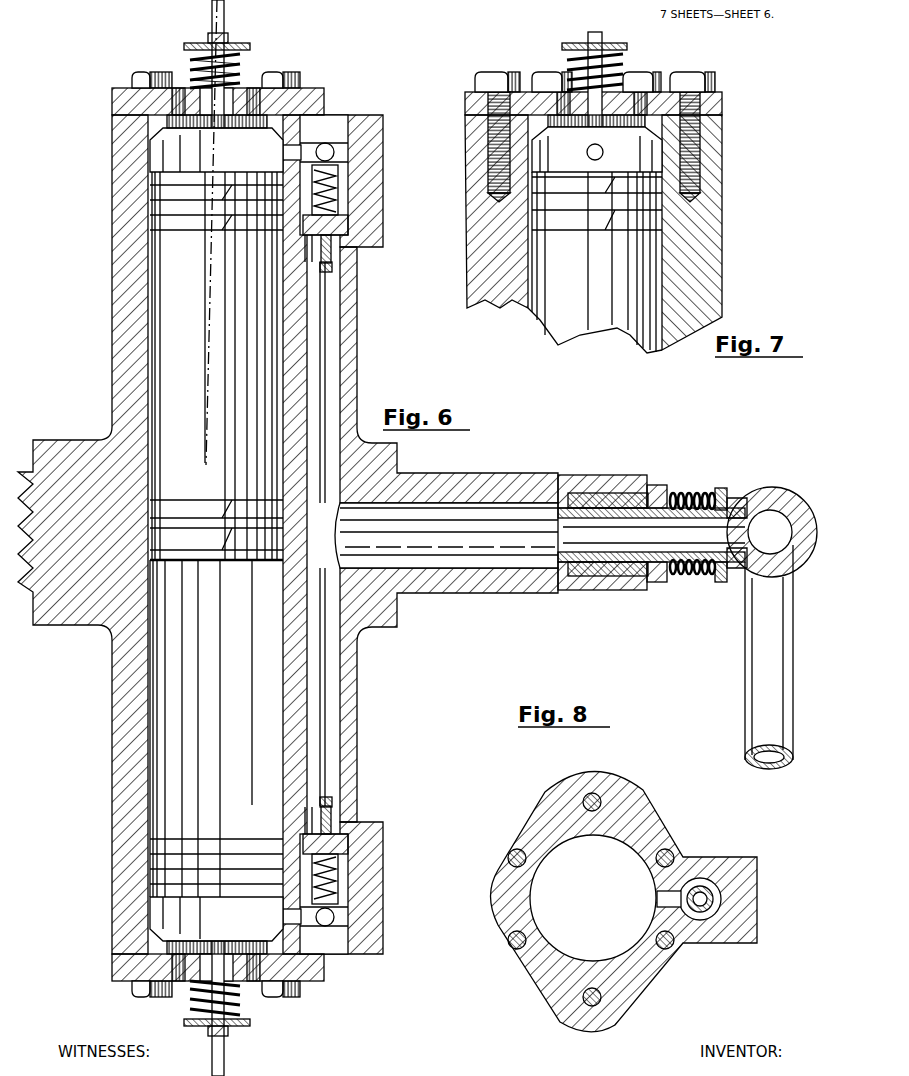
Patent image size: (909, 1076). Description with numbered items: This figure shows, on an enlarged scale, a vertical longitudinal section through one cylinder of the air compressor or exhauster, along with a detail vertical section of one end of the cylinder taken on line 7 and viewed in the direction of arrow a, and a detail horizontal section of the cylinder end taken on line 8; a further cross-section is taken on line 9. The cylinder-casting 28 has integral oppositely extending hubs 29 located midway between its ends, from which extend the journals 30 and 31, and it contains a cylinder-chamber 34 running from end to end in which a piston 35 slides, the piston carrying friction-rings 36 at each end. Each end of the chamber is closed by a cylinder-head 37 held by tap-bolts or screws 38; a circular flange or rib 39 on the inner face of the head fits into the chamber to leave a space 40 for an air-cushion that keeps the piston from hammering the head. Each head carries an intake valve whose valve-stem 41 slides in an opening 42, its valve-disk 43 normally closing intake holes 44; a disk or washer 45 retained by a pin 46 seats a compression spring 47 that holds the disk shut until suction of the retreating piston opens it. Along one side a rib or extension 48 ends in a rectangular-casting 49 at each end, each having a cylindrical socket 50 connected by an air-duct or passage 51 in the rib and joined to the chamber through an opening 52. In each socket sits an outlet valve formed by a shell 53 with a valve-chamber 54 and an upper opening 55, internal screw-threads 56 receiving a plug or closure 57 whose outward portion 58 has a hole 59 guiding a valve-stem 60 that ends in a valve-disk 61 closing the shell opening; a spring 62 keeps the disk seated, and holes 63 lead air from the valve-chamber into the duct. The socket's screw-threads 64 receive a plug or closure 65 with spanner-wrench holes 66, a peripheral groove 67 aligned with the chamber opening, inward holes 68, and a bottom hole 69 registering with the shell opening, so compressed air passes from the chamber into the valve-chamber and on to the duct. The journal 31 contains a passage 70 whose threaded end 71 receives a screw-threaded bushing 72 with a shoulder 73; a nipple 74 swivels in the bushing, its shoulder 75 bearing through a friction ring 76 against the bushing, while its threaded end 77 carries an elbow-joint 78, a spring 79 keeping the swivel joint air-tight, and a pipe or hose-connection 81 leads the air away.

In FIG. 6, the section line 7- 7 is at (215, 335).
In FIG. 6, the section line 8- 8 is at (112, 148).
In FIG. 6, the section line 9- 9 is at (112, 196).
In FIG. 6, the arrow a is at (22, 272).
In FIG. 6, the cylinder-casting 28 is at (114, 218).
In FIG. 7, the cylinder-casting 28 is at (700, 257).
In FIG. 8, the cylinder-casting 28 is at (632, 803).
In FIG. 6, the hubs 29 is at (82, 447).
In FIG. 6, the journal 30 is at (28, 470).
In FIG. 6, the journal 31 is at (496, 478).
In FIG. 6, the cylinder-chamber 34 is at (176, 723).
In FIG. 8, the cylinder-chamber 34 is at (593, 898).
In FIG. 6, the piston 35 is at (162, 357).
In FIG. 7, the piston 35 is at (622, 318).
In FIG. 6, the friction-rings 36 is at (193, 205).
In FIG. 7, the friction-rings 36 is at (614, 210).
In FIG. 6, the cylinder-head 37 is at (322, 110).
In FIG. 7, the cylinder-head 37 is at (724, 106).
In FIG. 6, the tap-bolts or screws 38 is at (133, 80).
In FIG. 7, the tap-bolts or screws 38 is at (552, 71).
In FIG. 8, the tap-bolts or screws 38 is at (517, 848).
In FIG. 6, the circular flange or rib 39 is at (152, 122).
In FIG. 7, the circular flange or rib 39 is at (665, 165).
In FIG. 6, the space 40 is at (188, 167).
In FIG. 7, the space 40 is at (605, 176).
In FIG. 6, the valve-stem 41 is at (226, 36).
In FIG. 7, the valve-stem 41 is at (594, 35).
In FIG. 6, the opening 42 is at (245, 115).
In FIG. 7, the opening 42 is at (655, 85).
In FIG. 6, the valve-disk 43 is at (165, 948).
In FIG. 7, the valve-disk 43 is at (645, 124).
In FIG. 6, the holes or openings 44 is at (178, 95).
In FIG. 7, the holes or openings 44 is at (500, 100).
In FIG. 6, the disk or washer 45 is at (200, 55).
In FIG. 7, the disk or washer 45 is at (625, 57).
In FIG. 6, the pin 46 is at (213, 42).
In FIG. 7, the pin 46 is at (605, 45).
In FIG. 6, the compression spring 47 is at (200, 75).
In FIG. 7, the compression spring 47 is at (652, 72).
In FIG. 6, the rib or extension 48 is at (351, 330).
In FIG. 6, the rectangular-casting 49 is at (375, 128).
In FIG. 8, the rectangular-casting 49 is at (756, 862).
In FIG. 6, the cylindrical socket 50 is at (340, 176).
In FIG. 6, the air-duct or passage 51 is at (326, 346).
In FIG. 6, the hole or opening 52 is at (300, 153).
In FIG. 7, the hole or opening 52 is at (603, 153).
In FIG. 8, the hole or opening 52 is at (665, 900).
In FIG. 6, the shell 53 is at (340, 200).
In FIG. 6, the valve-chamber 54 is at (340, 186).
In FIG. 6, the hole or opening 55 is at (350, 160).
In FIG. 6, the internal screw-threads 56 is at (350, 226).
In FIG. 6, the screw-threaded plug or closure 57 is at (292, 280).
In FIG. 6, the outwardly extending portion 58 is at (332, 262).
In FIG. 6, the hole or opening 59 is at (276, 300).
In FIG. 6, the valve-stem 60 is at (333, 290).
In FIG. 6, the valve-disk 61 is at (205, 215).
In FIG. 6, the coiled or compression spring 62 is at (286, 216).
In FIG. 6, the holes or openings 63 is at (297, 246).
In FIG. 6, the internal screw-threads 64 is at (360, 120).
In FIG. 6, the screw-threaded plug or closure 65 is at (343, 135).
In FIG. 8, the screw-threaded plug or closure 65 is at (706, 890).
In FIG. 6, the spanner-wrench holes 66 is at (296, 148).
In FIG. 6, the groove 67 is at (350, 160).
In FIG. 8, the groove 67 is at (720, 906).
In FIG. 6, the holes or openings 68 is at (336, 140).
In FIG. 8, the holes or openings 68 is at (700, 887).
In FIG. 6, the hole or opening 69 is at (345, 150).
In FIG. 8, the hole or opening 69 is at (721, 897).
In FIG. 6, the opening or passage 70 is at (525, 510).
In FIG. 6, the internal screw-thread 71 is at (640, 488).
In FIG. 6, the screw-threaded bushing 72 is at (605, 495).
In FIG. 6, the shoulder 73 is at (680, 492).
In FIG. 6, the nipple 74 is at (720, 487).
In FIG. 6, the shoulder 75 is at (560, 550).
In FIG. 6, the friction ring 76 is at (568, 498).
In FIG. 6, the screw-thread 77 is at (765, 492).
In FIG. 6, the elbow-joint 78 is at (796, 505).
In FIG. 6, the coiled or compression spring 79 is at (736, 497).
In FIG. 6, the pipe or hose-connection 81 is at (760, 645).